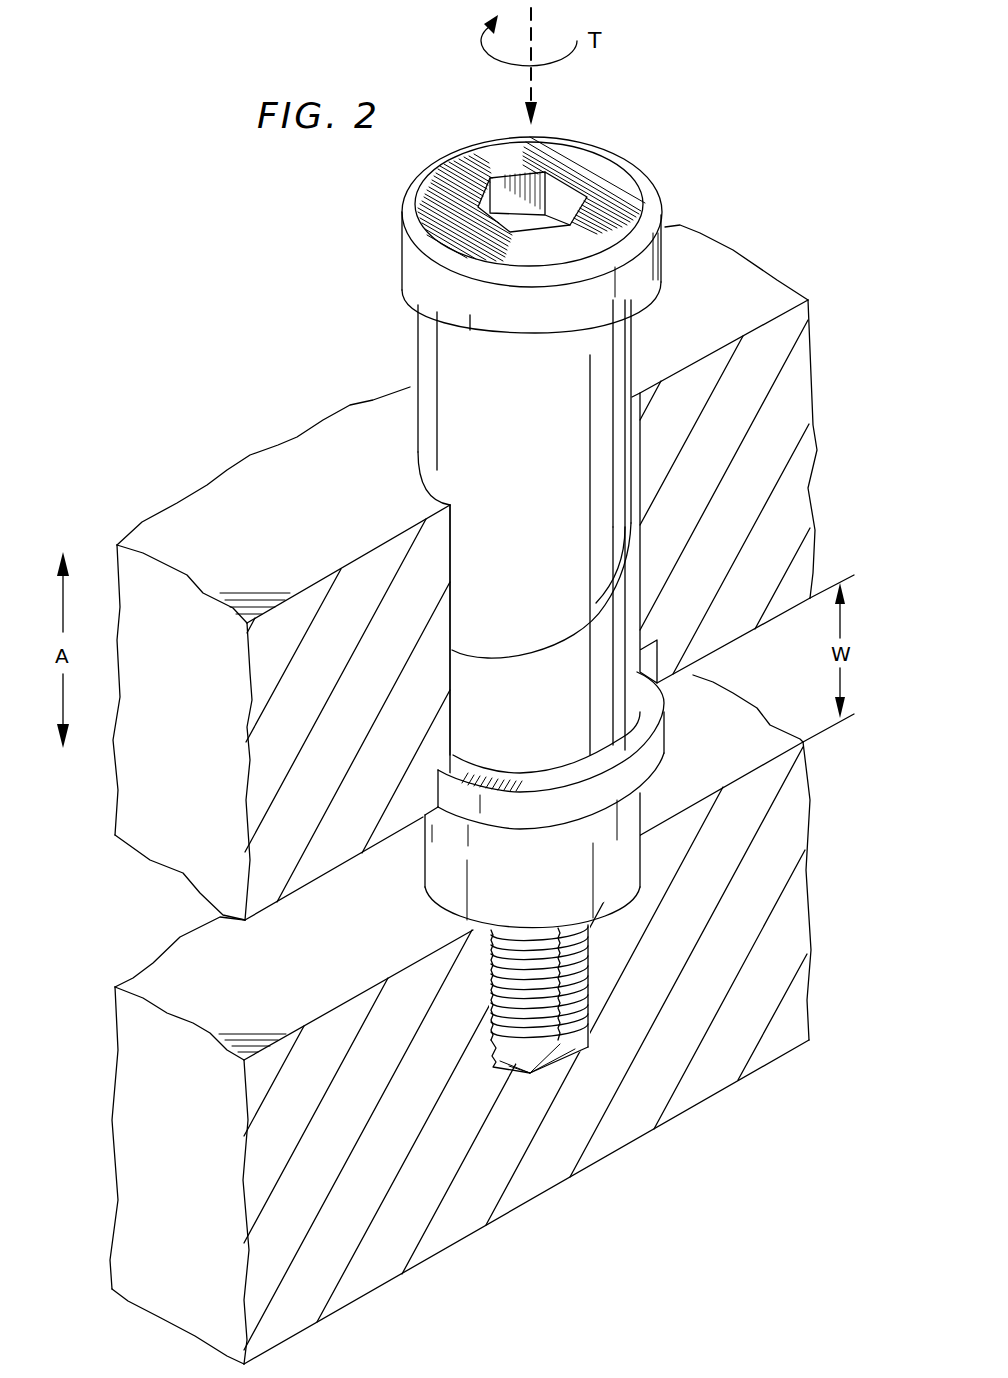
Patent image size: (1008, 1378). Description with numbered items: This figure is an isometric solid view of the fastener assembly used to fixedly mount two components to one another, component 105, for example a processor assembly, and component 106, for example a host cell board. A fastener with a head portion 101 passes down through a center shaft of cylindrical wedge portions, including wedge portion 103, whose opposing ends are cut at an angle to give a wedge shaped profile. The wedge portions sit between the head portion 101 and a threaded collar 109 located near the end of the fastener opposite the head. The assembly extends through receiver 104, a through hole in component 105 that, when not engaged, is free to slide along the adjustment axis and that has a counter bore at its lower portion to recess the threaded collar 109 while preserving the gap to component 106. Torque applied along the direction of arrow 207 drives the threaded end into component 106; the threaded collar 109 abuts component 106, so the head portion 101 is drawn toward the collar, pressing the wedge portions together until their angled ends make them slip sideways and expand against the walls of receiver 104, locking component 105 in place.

The head portion 101 is at (402, 232).
The wedge portion 103 is at (508, 678).
The receiver 104 is at (424, 342).
The component 105 is at (806, 363).
The component 106 is at (803, 916).
The threaded collar 109 is at (438, 897).
The arrow 207 is at (528, 84).